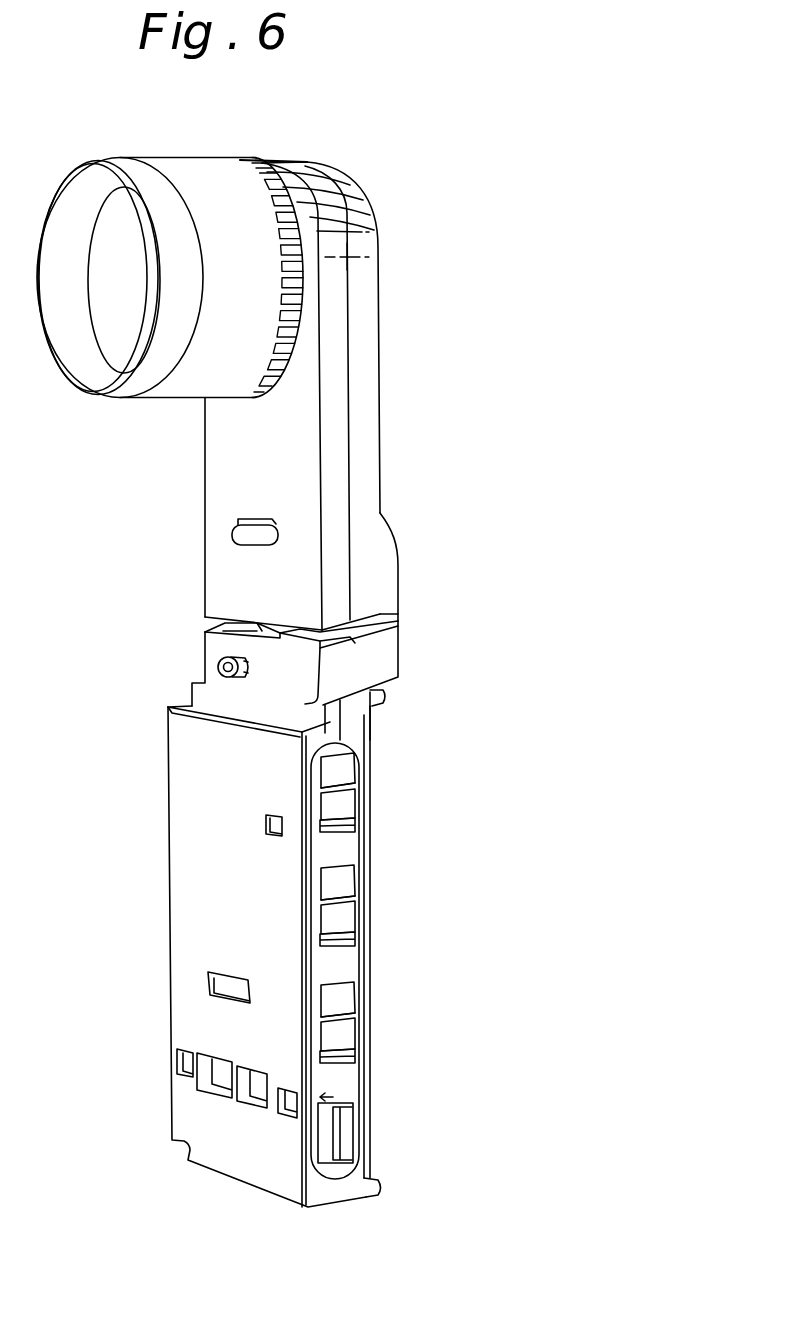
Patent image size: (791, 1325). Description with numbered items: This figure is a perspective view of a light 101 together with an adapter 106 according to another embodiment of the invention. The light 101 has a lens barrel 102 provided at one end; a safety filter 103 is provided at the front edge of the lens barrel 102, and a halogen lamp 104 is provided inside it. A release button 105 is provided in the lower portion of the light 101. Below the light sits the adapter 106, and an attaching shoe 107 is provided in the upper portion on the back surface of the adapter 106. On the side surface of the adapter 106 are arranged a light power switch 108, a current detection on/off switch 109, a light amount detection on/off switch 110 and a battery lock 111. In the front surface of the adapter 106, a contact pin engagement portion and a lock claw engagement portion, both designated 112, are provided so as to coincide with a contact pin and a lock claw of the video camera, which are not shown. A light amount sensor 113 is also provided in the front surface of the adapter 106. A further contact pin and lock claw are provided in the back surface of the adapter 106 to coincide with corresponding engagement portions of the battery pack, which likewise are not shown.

The light 101 is at (289, 396).
The lens barrel 102 is at (213, 158).
The safety filter 103 is at (137, 162).
The halogen lamp 104 is at (111, 329).
The release button 105 is at (230, 530).
The adapter 106 is at (192, 861).
The attaching shoe 107 is at (297, 677).
The light power switch 108 is at (353, 1035).
The switch 109 is at (355, 885).
The light amount detection on/off switch 110 is at (355, 773).
The battery lock 111 is at (352, 1137).
The contact pin engagement portion and lock claw engagement portion 112 is at (265, 818).
The light amount sensor 113 is at (215, 666).